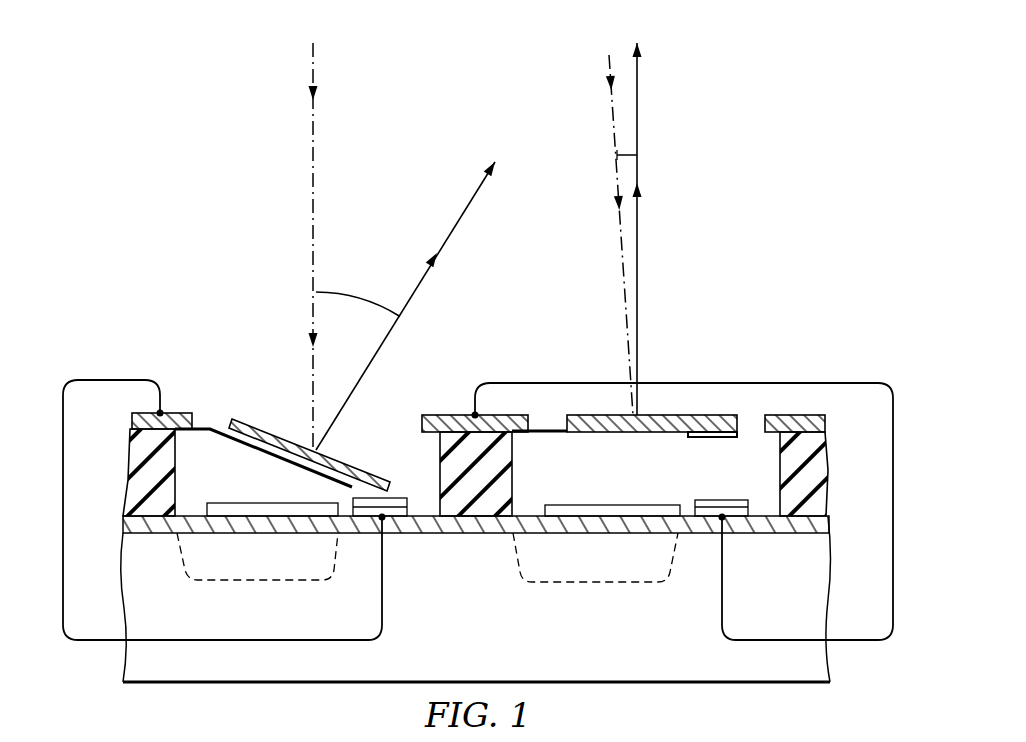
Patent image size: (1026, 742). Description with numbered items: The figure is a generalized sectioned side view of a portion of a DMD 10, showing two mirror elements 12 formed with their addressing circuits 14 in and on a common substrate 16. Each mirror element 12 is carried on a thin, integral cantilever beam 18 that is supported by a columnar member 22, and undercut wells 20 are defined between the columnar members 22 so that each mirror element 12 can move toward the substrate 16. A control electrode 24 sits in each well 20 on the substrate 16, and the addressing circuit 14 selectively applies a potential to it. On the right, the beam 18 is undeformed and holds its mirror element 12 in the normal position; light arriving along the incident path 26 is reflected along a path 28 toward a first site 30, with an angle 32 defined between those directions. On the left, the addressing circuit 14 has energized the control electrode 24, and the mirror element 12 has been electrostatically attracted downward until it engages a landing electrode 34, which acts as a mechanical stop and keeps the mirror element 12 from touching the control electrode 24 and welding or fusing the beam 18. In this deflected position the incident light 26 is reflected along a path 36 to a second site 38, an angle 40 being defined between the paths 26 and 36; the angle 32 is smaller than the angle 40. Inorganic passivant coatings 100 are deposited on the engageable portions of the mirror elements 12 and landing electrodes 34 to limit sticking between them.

The DMD 10 is at (767, 218).
The mirror element 12 is at (256, 427).
The addressing circuit 14 is at (240, 582).
The substrate 16 is at (486, 640).
The beam 18 is at (207, 431).
The well 20 is at (227, 482).
The columnar member 22 is at (133, 445).
The control electrode 24 is at (270, 503).
The path of incident light 26 is at (313, 158).
The path of reflected light 28 is at (637, 112).
The first site 30 is at (636, 33).
The angle 32 is at (620, 150).
The landing electrode 34 is at (400, 510).
The path of reflected light in deflected position 36 is at (467, 210).
The second site 38 is at (492, 150).
The angle 40 is at (354, 296).
The passivant coating 100 is at (352, 486).